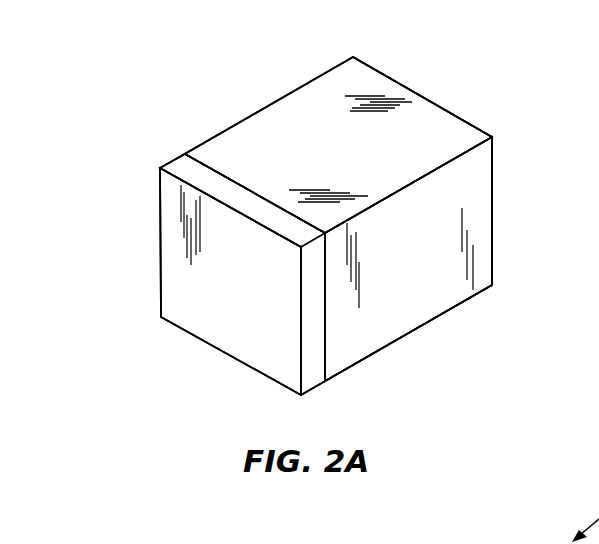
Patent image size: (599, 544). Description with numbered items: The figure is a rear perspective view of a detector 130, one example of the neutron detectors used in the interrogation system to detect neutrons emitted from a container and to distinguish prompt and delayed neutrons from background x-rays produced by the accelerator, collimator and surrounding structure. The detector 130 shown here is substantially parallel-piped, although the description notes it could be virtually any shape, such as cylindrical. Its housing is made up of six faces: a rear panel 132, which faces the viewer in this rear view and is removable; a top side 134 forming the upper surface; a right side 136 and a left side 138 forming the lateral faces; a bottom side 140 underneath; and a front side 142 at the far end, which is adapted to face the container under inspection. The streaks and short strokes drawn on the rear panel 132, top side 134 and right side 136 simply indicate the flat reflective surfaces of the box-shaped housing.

The detector 130 is at (158, 82).
The rear panel 132 is at (251, 289).
The top side 134 is at (362, 152).
The right side 136 is at (429, 264).
The left side 138 is at (319, 76).
The bottom side 140 is at (425, 324).
The front side 142 is at (391, 78).